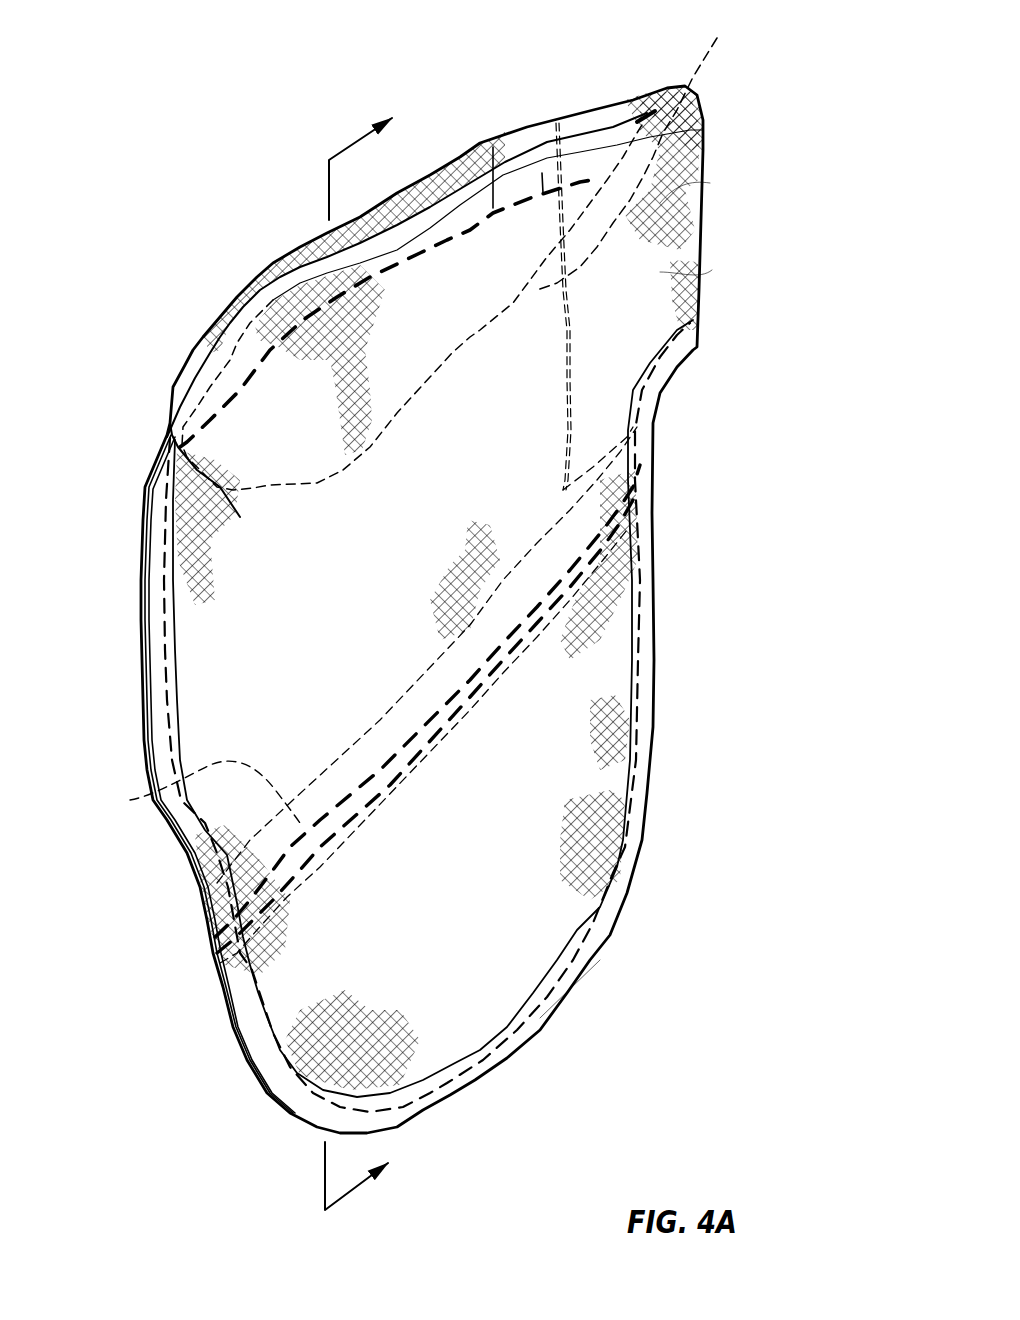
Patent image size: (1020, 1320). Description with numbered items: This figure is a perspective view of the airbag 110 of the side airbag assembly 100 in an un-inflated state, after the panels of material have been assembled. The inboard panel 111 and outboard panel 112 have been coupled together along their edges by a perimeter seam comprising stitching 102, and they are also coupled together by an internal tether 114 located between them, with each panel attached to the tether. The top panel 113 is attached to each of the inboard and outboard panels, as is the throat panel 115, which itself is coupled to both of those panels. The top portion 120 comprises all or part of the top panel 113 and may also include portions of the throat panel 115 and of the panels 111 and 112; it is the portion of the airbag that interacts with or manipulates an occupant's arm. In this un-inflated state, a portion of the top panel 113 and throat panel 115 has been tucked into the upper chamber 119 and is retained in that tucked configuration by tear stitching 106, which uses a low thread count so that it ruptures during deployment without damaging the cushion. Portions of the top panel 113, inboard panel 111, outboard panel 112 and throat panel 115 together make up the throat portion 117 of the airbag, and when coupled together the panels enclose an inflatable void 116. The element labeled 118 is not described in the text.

The side airbag assembly 100 is at (172, 78).
The airbag 110 is at (246, 155).
The stitching 102 is at (637, 693).
The top portion 120 is at (253, 258).
The upper chamber 119 is at (165, 430).
The outboard panel 112 is at (140, 499).
The top panel 113 is at (431, 337).
The tear stitching 106 is at (542, 173).
The inflatable void 116 is at (638, 150).
The throat panel 115 is at (667, 200).
The throat portion 117 is at (667, 270).
The inboard panel 111 is at (335, 661).
The internal tether 114 is at (130, 800).
The bottom seam 118 is at (543, 960).